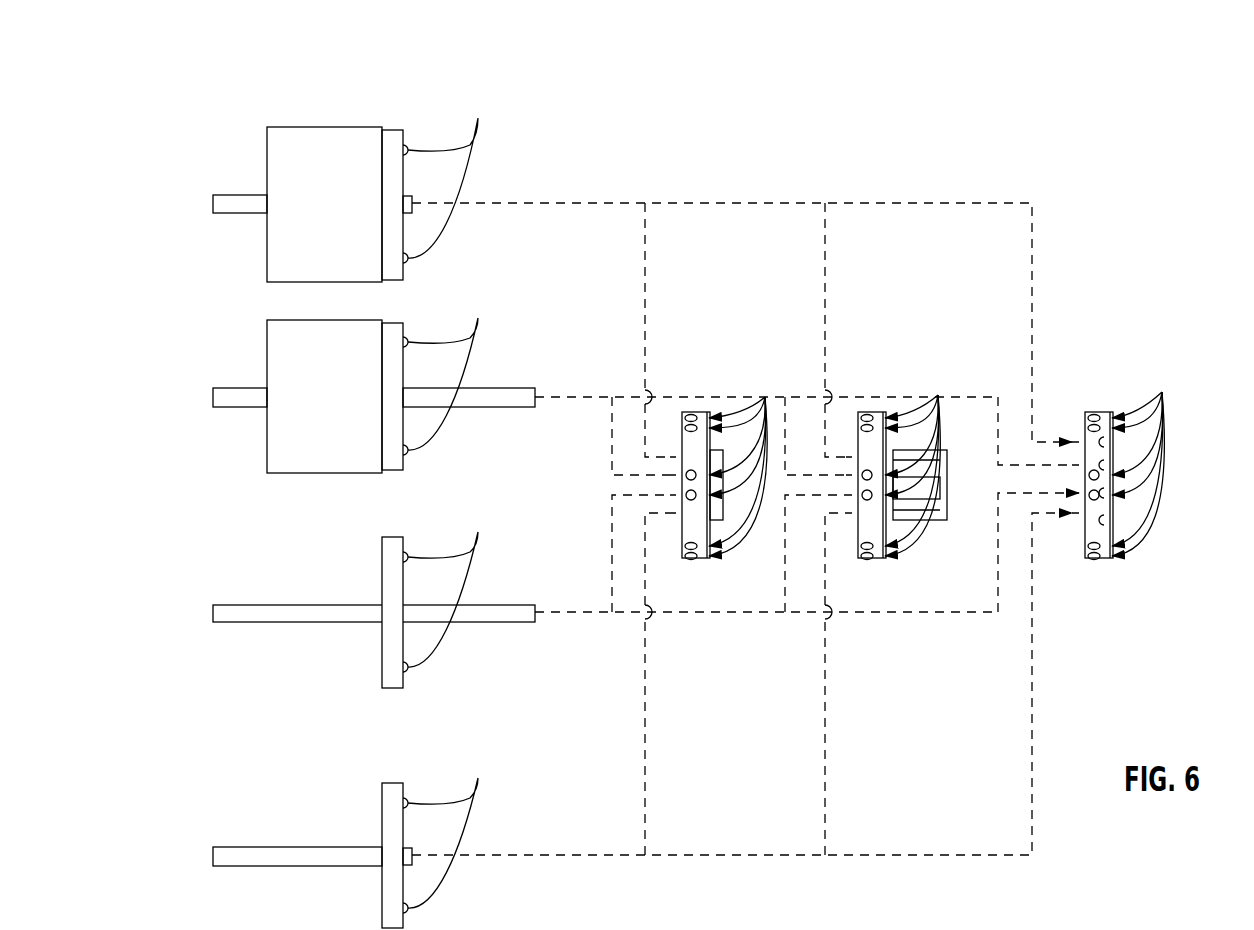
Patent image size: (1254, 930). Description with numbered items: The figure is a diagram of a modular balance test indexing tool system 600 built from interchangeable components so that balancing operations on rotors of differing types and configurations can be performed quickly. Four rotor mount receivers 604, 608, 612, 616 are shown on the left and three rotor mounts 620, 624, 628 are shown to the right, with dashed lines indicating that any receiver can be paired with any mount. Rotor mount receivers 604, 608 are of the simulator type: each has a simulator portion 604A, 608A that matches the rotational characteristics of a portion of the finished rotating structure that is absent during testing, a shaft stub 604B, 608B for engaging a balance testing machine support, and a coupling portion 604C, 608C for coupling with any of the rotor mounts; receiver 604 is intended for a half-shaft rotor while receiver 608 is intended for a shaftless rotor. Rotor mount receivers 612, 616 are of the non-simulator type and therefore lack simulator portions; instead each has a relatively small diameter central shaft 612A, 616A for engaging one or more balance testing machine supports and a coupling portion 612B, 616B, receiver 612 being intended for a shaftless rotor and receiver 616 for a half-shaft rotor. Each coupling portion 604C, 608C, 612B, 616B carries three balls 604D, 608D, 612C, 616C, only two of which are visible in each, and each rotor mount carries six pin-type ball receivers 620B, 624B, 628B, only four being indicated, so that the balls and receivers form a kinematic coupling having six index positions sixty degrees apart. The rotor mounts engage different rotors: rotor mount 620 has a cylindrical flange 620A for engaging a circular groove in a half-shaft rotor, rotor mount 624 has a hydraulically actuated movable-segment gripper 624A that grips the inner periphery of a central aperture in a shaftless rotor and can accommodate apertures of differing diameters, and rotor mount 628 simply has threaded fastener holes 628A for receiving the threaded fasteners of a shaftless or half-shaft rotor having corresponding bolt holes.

The modular balance test indexing tool system 600 is at (1030, 146).
The rotor mount receiver 604 is at (344, 156).
The simulator portion 604A is at (298, 140).
The shaft stub 604B is at (247, 193).
The coupling portion 604C is at (398, 126).
The balls 604D is at (458, 175).
The rotor mount receiver 608 is at (334, 366).
The simulator portion 608A is at (282, 450).
The shaft stub 608B is at (228, 386).
The coupling portion 608C is at (397, 319).
The balls 608D is at (460, 372).
The rotor mount receiver 612 is at (339, 583).
The central shaft 612A is at (232, 603).
The coupling portion 612B is at (398, 534).
The balls 612C is at (460, 587).
The rotor mount receiver 616 is at (328, 826).
The central shaft 616A is at (232, 847).
The coupling portion 616B is at (398, 781).
The balls 616C is at (460, 832).
The rotor mount 620 is at (739, 534).
The cylindrical flange 620A is at (718, 520).
The pin-type ball receivers 620B is at (753, 462).
The rotor mount 624 is at (912, 532).
The hydraulically actuated movable-segment gripper 624A is at (930, 526).
The pin-type ball receivers 624B is at (926, 462).
The rotor mount 628 is at (1141, 467).
The threaded fastener holes 628A is at (1116, 442).
The pin-type ball receivers 628B is at (1151, 462).